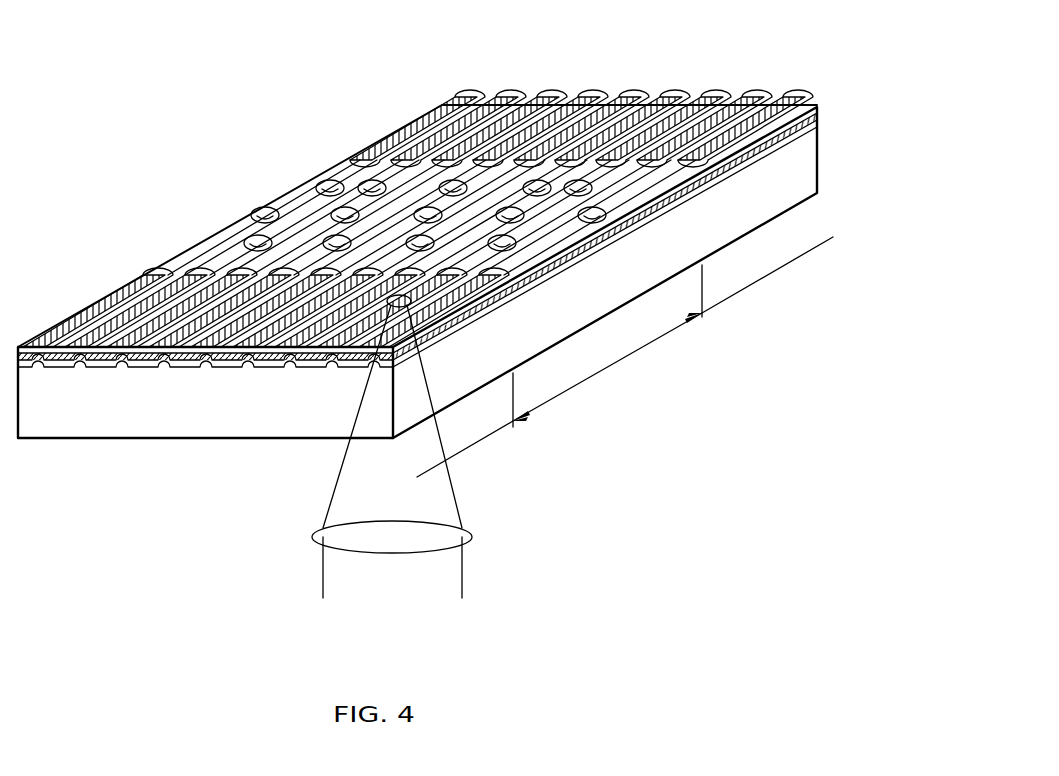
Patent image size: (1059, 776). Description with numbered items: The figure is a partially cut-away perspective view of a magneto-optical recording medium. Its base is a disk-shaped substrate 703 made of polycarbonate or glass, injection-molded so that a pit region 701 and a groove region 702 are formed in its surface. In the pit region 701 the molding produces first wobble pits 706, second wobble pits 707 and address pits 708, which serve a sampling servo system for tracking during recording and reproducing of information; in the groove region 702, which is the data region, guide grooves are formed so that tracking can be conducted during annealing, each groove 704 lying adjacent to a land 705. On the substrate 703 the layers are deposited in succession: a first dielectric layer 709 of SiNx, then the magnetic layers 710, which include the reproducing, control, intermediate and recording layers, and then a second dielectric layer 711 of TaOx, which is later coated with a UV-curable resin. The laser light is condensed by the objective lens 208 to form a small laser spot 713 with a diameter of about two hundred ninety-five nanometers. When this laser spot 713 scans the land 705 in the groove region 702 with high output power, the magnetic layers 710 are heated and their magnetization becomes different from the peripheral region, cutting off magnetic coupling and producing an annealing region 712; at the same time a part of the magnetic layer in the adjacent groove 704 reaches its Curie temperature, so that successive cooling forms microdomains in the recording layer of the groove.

The objective lens 208 is at (463, 531).
The pit region 701 is at (607, 346).
The groove region 702 is at (625, 357).
The substrate 703 is at (92, 412).
The groove 704 is at (100, 305).
The land 705 is at (148, 300).
The first wobble pits 706 is at (290, 232).
The second wobble pits 707 is at (281, 197).
The address pits 708 is at (337, 212).
The first dielectric layer 709 is at (147, 372).
The magnetic layers 710 is at (197, 354).
The second dielectric layer 711 is at (229, 350).
The annealing region 712 is at (693, 103).
The laser spot 713 is at (397, 295).